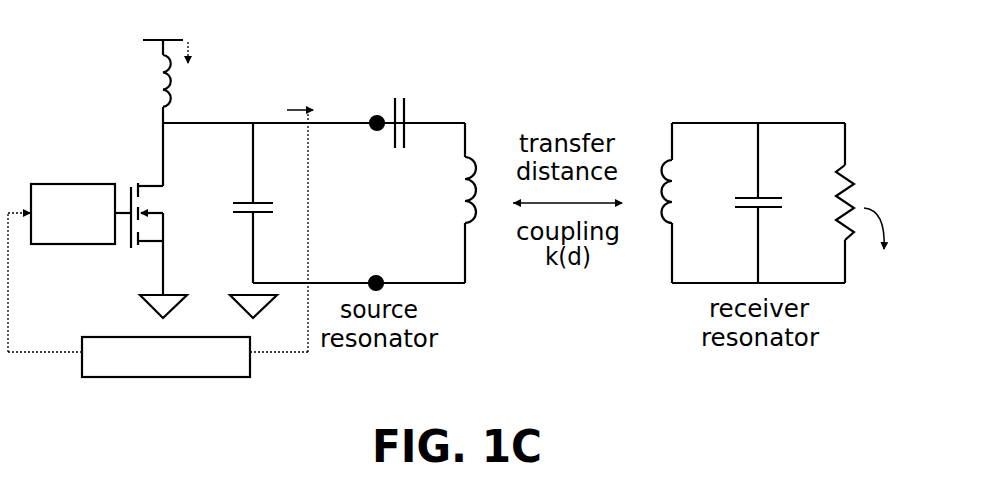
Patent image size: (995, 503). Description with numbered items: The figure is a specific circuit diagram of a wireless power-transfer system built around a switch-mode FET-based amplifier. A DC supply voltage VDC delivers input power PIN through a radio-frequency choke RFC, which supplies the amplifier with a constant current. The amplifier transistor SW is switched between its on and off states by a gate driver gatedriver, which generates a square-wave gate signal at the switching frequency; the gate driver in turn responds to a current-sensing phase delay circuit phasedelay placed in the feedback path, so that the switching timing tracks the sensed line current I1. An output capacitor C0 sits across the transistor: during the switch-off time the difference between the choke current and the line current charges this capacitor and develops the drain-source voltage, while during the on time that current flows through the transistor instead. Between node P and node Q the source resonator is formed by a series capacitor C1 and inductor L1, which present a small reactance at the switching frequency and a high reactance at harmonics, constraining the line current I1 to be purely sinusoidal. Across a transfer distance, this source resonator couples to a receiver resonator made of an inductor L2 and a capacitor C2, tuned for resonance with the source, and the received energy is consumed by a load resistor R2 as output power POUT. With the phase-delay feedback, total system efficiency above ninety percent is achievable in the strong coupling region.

The DC supply voltage VDC is at (163, 33).
The input power PIN is at (206, 53).
The radio-frequency choke RFC is at (199, 89).
The switch-mode FET SW is at (180, 238).
The gate driver gatedriver is at (81, 214).
The output capacitor C0 is at (264, 203).
The line current I1 is at (300, 93).
The phase delay circuit phasedelay is at (158, 243).
The node P is at (374, 109).
The capacitor of source resonator C1 is at (399, 110).
The inductor of source resonator L1 is at (452, 203).
The node Q is at (374, 269).
The inductor of receiver resonator L2 is at (686, 203).
The capacitor of receiver resonator C2 is at (770, 203).
The load resistor R2 is at (866, 203).
The output power POUT is at (882, 250).